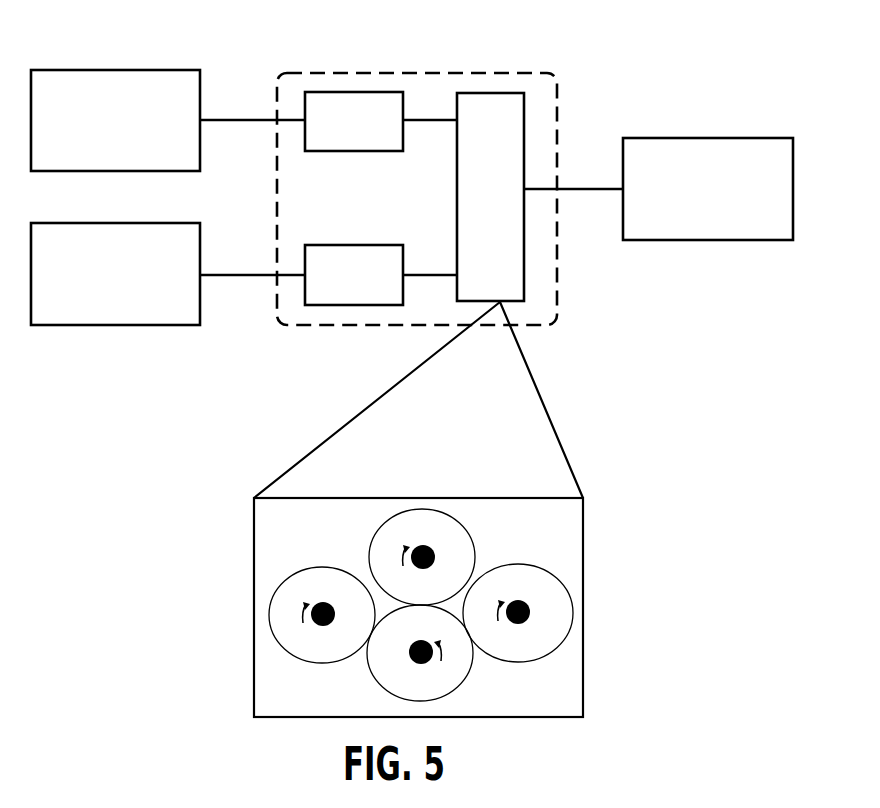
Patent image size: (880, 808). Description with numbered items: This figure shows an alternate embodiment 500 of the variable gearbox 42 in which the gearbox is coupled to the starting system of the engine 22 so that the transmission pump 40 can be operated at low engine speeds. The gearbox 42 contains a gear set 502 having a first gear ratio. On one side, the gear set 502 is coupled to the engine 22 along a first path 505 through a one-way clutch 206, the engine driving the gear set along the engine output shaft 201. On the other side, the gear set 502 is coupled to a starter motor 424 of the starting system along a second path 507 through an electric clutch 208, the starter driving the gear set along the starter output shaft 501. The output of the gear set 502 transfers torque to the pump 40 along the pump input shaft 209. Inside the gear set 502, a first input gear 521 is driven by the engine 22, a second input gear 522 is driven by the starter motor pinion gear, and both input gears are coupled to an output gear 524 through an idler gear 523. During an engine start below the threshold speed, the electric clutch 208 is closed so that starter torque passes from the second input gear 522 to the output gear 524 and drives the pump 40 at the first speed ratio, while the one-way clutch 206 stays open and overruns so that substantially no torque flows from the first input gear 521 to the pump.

The engine 22 is at (104, 132).
The starter motor 424 is at (99, 286).
The one-way clutch 206 is at (371, 133).
The electric clutch 208 is at (371, 287).
The gear set 502 is at (507, 209).
The pump 40 is at (721, 202).
The variable gearbox 42 is at (518, 72).
The engine output shaft 201 is at (217, 121).
The starter output shaft 501 is at (217, 276).
The first path 505 is at (410, 119).
The second path 507 is at (410, 274).
The pump input shaft 209 is at (565, 189).
The alternate embodiment 500 is at (747, 54).
The first input gear 521 is at (305, 568).
The second input gear 522 is at (515, 568).
The idler gear 523 is at (462, 677).
The output gear 524 is at (421, 509).